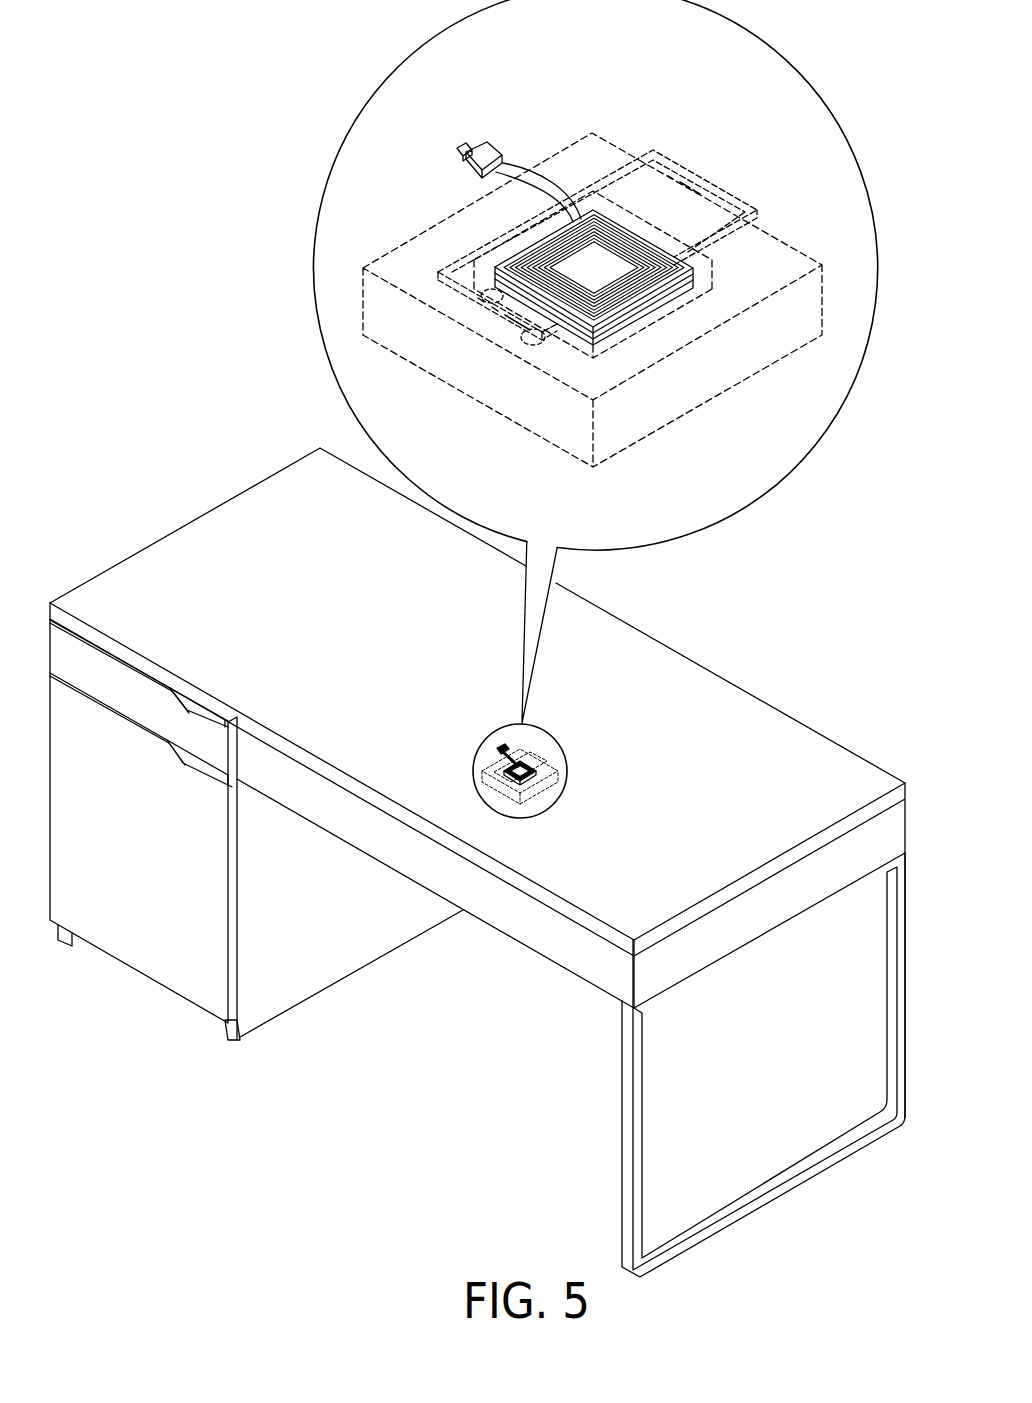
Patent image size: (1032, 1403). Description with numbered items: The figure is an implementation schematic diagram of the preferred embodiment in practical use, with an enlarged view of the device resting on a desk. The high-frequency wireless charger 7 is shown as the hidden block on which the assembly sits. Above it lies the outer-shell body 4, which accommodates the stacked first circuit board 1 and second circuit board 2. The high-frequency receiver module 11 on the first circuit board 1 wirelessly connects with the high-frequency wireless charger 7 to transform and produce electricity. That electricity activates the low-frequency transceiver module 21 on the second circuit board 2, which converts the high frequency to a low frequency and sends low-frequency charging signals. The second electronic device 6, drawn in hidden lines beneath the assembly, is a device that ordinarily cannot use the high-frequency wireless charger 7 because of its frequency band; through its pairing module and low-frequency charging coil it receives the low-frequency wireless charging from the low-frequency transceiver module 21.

The first circuit board 1 is at (614, 368).
The high-frequency receiver module 11 is at (625, 330).
The second circuit board 2 is at (500, 264).
The low-frequency transceiver module 21 is at (520, 252).
The outer-shell body 4 is at (713, 275).
The second electronic device 6 is at (654, 148).
The high-frequency wireless charger 7 is at (777, 360).